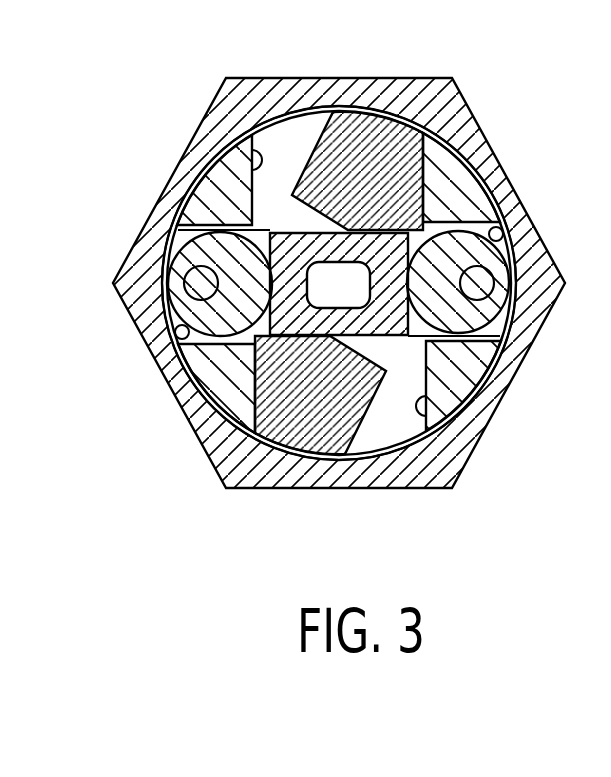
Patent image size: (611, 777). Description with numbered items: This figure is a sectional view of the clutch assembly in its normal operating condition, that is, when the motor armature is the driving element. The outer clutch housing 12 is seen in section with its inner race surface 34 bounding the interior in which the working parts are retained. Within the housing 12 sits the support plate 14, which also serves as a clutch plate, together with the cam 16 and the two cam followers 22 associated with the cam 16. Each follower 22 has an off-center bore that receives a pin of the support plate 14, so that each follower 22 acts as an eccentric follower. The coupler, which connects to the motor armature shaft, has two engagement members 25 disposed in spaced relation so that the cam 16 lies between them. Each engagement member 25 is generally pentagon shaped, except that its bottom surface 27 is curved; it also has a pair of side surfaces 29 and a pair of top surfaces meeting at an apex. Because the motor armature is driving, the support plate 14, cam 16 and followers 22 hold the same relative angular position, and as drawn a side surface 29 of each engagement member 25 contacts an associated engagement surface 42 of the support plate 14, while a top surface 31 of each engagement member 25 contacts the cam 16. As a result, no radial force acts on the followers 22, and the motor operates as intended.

The clutch housing 12 is at (535, 300).
The support plate 14 is at (220, 188).
The cam 16 is at (184, 394).
The cam followers 22 is at (170, 358).
The engagement members 25 is at (387, 153).
The bottom surface 27 is at (393, 130).
The side surfaces 29 is at (320, 142).
The top surface 31 is at (202, 220).
The inner race surface 34 is at (506, 218).
The engagement surfaces 42 is at (247, 141).